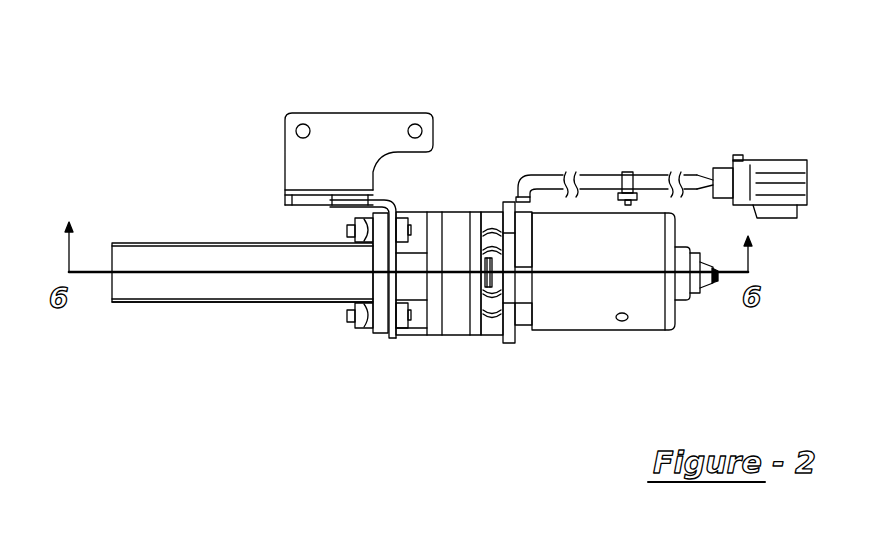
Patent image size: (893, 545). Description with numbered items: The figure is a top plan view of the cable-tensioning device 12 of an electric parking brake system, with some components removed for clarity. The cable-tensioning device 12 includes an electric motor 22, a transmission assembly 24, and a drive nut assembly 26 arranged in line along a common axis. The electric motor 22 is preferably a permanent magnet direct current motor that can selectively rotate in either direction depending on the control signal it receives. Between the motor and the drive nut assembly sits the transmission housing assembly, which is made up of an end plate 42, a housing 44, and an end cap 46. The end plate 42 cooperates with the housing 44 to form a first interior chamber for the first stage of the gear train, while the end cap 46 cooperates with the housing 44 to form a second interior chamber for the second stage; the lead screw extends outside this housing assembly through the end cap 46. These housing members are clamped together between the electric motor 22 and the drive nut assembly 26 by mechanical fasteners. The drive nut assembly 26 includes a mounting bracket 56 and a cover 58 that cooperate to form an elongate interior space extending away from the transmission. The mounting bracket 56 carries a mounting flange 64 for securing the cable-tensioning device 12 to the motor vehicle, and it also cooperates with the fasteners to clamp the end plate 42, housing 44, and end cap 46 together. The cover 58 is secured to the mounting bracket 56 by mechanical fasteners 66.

The cable-tensioning device 12 is at (556, 93).
The electric motor 22 is at (593, 331).
The transmission assembly 24 is at (456, 344).
The drive nut assembly 26 is at (167, 240).
The end plate 42 is at (482, 211).
The housing 44 is at (462, 212).
The end cap 46 is at (427, 212).
The mounting bracket 56 is at (393, 338).
The cover 58 is at (258, 302).
The mounting flange 64 is at (362, 113).
The mechanical fasteners 66 is at (394, 210).